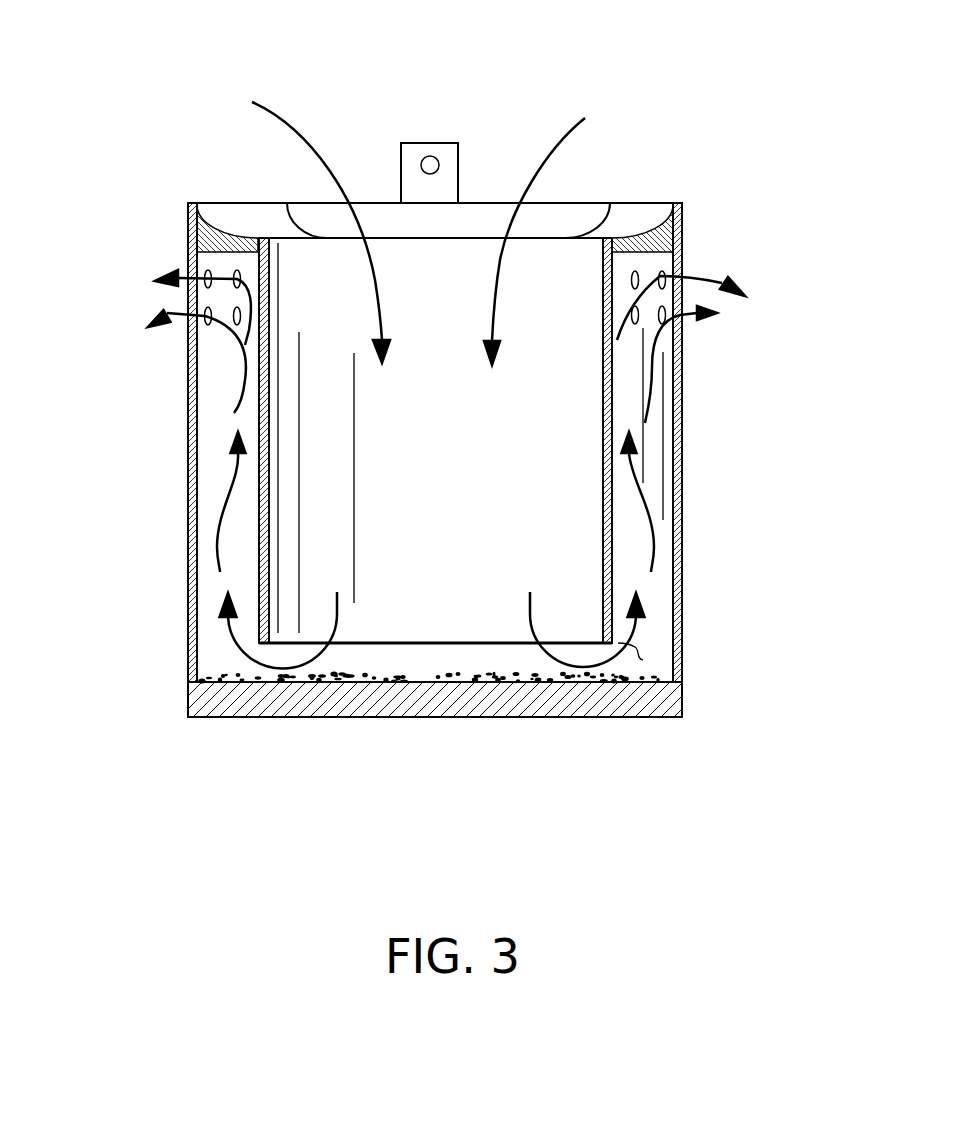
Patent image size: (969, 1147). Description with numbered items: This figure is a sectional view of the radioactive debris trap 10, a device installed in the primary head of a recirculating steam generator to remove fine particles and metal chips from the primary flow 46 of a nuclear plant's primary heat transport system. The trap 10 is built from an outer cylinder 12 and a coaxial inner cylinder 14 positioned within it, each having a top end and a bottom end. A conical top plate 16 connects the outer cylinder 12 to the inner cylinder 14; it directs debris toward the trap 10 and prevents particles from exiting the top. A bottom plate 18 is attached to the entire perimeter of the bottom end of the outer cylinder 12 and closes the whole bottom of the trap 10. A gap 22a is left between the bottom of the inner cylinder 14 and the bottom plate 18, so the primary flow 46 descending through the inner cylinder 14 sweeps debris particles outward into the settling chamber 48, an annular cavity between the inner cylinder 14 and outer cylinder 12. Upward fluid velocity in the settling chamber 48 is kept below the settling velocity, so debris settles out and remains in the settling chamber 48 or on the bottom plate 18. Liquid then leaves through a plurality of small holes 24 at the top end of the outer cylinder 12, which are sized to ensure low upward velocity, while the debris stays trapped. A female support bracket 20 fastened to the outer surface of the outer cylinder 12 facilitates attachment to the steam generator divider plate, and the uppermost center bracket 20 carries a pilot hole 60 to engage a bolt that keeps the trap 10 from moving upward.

The radioactive debris trap 10 is at (455, 418).
The outer cylinder 12 is at (188, 506).
The inner cylinder 14 is at (268, 500).
The conical top plate 16 is at (227, 223).
The bottom plate 18 is at (383, 720).
The female support bracket 20 is at (446, 103).
The gap 22a is at (643, 660).
The small holes 24 is at (237, 279).
The primary flow 46 is at (330, 167).
The settling chamber 48 is at (218, 590).
The pilot hole 60 is at (440, 163).